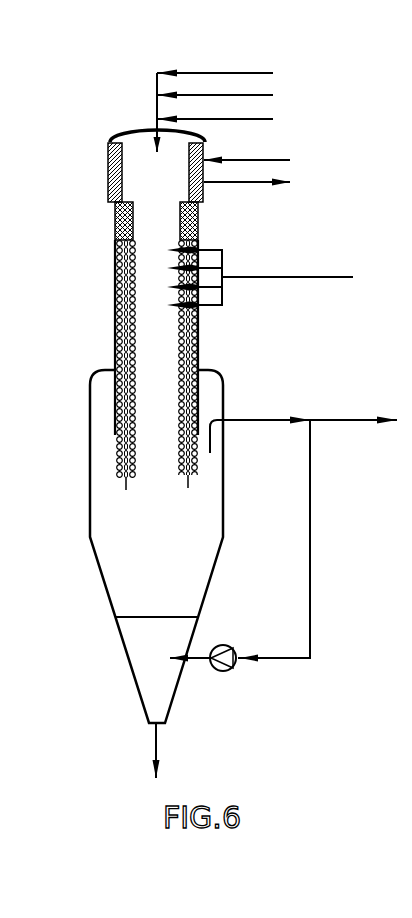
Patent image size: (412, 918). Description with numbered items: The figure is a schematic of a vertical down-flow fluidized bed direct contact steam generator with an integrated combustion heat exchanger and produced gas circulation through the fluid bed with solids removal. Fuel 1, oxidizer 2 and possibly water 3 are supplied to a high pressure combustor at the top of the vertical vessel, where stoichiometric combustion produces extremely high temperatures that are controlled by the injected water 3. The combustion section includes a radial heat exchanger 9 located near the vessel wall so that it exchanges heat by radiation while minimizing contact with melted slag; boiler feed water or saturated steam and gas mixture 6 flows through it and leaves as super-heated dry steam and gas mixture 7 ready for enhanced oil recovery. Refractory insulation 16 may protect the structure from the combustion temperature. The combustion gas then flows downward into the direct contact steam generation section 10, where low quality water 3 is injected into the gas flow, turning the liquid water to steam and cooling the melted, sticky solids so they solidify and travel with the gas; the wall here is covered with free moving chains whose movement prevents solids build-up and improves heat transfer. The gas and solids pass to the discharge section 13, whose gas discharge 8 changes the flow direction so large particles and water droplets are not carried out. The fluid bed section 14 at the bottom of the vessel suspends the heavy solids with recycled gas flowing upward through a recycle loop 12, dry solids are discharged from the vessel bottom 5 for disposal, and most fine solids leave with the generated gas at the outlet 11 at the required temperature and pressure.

The fuel 1 is at (215, 62).
The oxidizer 2 is at (215, 85).
The water 3 is at (276, 277).
The vessel bottom 5 is at (152, 743).
The boiler feed water or saturated steam and gas mixture 6 is at (274, 160).
The super-heated dry steam and gas mixture 7 is at (252, 183).
The gas discharge 8 is at (278, 420).
The radial heat exchanger 9 is at (109, 188).
The direct contact steam generation section 10 is at (115, 310).
The fine solid particles discharge 11 is at (355, 420).
The recycle line with pump 12 is at (275, 658).
The discharge section 13 is at (93, 458).
The fluid bed section 14 is at (137, 658).
The refractory insulation 16 is at (115, 240).